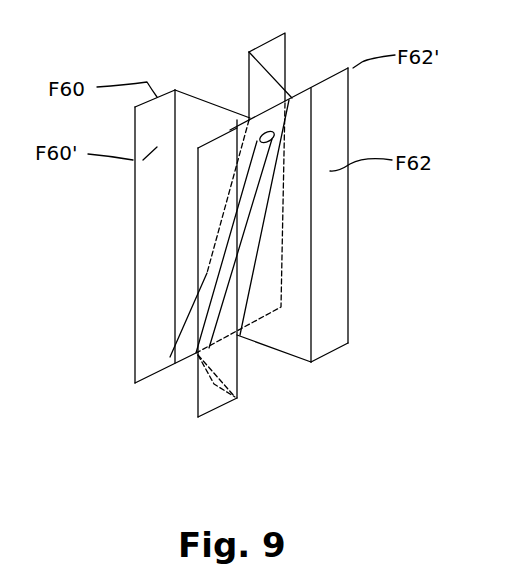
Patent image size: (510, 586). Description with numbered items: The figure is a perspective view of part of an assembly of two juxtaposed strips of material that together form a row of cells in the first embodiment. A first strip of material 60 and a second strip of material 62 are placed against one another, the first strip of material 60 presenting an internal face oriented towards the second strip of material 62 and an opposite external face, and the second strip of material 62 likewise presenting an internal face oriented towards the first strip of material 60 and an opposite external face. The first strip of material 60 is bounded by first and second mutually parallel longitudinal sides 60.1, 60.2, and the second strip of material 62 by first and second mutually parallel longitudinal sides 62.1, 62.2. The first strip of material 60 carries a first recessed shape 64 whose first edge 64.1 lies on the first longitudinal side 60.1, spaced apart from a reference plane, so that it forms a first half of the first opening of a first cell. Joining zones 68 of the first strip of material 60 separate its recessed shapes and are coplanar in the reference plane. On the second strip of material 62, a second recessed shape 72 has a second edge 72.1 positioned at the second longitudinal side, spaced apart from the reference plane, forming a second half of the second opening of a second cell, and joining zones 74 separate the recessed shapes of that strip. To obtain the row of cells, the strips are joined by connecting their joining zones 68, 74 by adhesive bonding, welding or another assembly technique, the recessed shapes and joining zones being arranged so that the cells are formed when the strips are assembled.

The first strip of material 60 is at (142, 222).
The first longitudinal side 60.1 is at (270, 41).
The second longitudinal side 60.2 is at (160, 374).
The second strip of material 62 is at (195, 397).
The first longitudinal side 62.1 is at (350, 70).
The second longitudinal side 62.2 is at (340, 349).
The first recessed shape 64 is at (228, 84).
The first edge 64.1 is at (188, 93).
The joining zone 68 is at (280, 55).
The second recessed shape 72 is at (265, 384).
The second edge 72.1 is at (257, 358).
The joining zone 74 is at (350, 228).